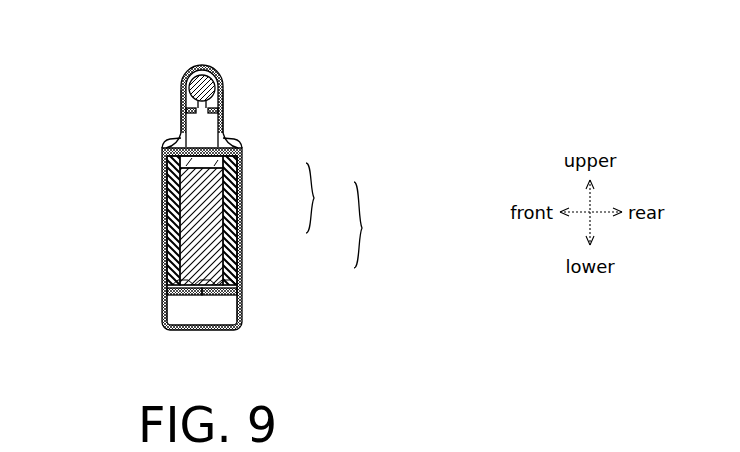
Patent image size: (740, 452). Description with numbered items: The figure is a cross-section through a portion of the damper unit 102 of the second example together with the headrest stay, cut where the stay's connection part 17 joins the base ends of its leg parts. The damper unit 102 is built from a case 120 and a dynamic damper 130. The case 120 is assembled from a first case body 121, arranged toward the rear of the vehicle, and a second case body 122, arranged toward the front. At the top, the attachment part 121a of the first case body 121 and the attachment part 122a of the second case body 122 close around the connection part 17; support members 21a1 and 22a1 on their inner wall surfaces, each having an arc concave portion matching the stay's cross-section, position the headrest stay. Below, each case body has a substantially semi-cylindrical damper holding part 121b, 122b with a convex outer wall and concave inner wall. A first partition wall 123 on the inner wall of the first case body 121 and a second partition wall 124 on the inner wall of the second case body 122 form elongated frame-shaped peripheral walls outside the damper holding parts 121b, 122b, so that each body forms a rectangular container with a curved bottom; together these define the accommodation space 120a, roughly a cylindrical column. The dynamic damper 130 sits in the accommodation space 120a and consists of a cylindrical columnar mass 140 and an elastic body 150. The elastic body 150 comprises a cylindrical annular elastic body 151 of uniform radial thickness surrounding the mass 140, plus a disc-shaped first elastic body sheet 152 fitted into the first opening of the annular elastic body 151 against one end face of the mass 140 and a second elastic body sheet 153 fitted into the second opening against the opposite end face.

The damper unit 102 is at (338, 77).
The case 120 is at (240, 329).
The accommodation space 120a is at (163, 212).
The first case body 121 is at (241, 303).
The second case body 122 is at (163, 310).
The attachment part 121a is at (219, 72).
The attachment part 122a is at (187, 80).
The damper holding part 121b is at (239, 291).
The damper holding part 122b is at (165, 291).
The support member 21a1 is at (221, 100).
The support member 22a1 is at (184, 108).
The connection part 17 is at (202, 66).
The first partition wall 123 is at (232, 140).
The second partition wall 124 is at (170, 144).
The dynamic damper 130 is at (376, 225).
The mass 140 is at (243, 265).
The elastic body 150 is at (329, 198).
The annular elastic body 151 is at (238, 192).
The first elastic body sheet 152 is at (236, 170).
The second elastic body sheet 153 is at (243, 220).